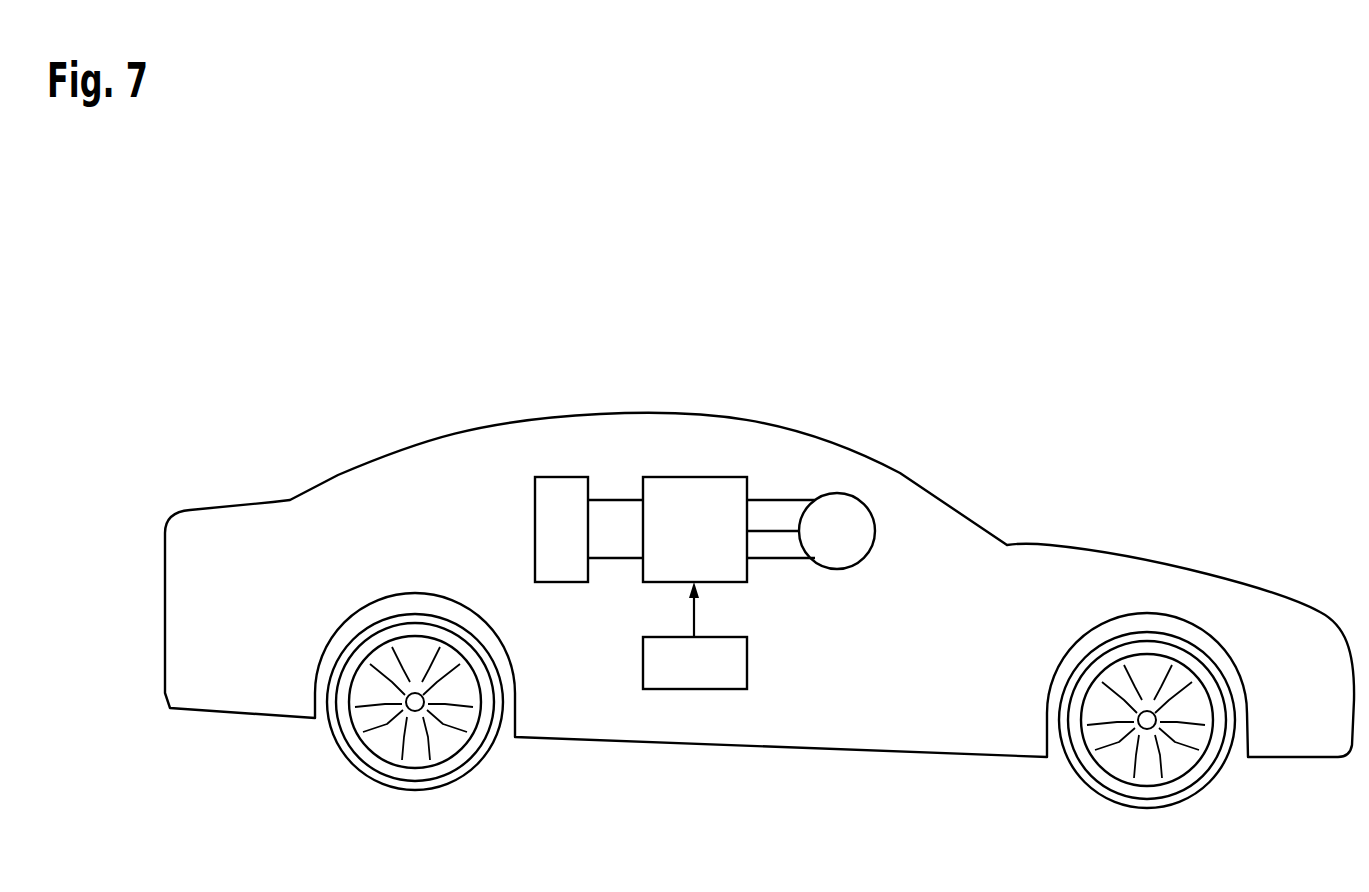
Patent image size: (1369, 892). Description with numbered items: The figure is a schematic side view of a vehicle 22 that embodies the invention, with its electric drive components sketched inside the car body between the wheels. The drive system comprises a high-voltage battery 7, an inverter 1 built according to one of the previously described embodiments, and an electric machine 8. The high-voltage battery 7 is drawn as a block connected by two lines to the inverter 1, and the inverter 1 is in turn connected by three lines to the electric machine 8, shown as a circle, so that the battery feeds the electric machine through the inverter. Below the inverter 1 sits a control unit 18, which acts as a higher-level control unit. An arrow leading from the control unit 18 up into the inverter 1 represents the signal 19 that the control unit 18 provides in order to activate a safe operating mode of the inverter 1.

The vehicle 22 is at (338, 475).
The high-voltage battery 7 is at (565, 477).
The inverter 1 is at (697, 477).
The electric machine 8 is at (821, 493).
The control unit 18 is at (747, 662).
The signal 19 is at (694, 617).